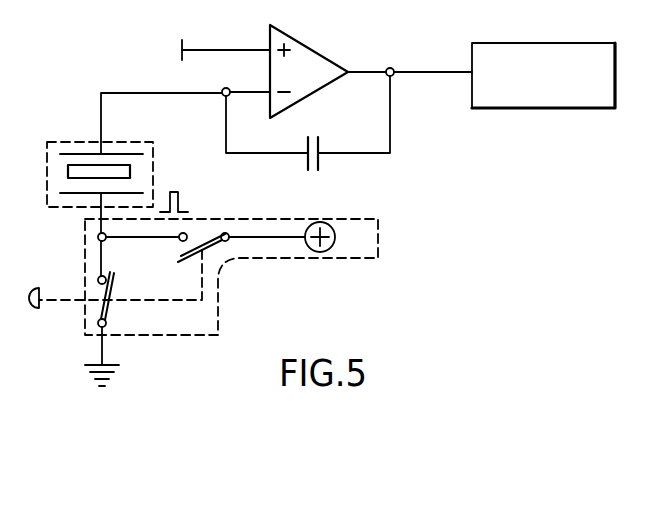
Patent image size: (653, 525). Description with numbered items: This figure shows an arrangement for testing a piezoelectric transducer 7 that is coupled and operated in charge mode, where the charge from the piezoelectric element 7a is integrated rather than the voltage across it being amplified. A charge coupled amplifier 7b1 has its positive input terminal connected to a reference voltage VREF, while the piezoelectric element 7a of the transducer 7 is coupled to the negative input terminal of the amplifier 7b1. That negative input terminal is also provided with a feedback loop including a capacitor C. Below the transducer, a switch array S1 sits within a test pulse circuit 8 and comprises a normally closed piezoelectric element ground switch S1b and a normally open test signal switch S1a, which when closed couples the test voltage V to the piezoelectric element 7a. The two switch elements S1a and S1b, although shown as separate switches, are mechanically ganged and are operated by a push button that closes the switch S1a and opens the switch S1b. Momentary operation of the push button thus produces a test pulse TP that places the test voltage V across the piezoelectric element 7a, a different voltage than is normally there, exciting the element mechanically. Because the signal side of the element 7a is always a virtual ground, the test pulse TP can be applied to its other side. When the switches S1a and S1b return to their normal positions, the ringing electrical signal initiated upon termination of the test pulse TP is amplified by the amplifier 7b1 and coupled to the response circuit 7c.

The piezoelectric transducer 7 is at (114, 162).
The piezoelectric element 7a is at (131, 171).
The charge coupled amplifier 7b1 is at (323, 53).
The response circuit 7c is at (537, 43).
The test pulse circuit 8 is at (82, 237).
The capacitor C is at (319, 168).
The test voltage V is at (335, 240).
The reference voltage VREF is at (182, 60).
The test pulse TP is at (188, 209).
The switch array S1 is at (160, 280).
The test signal switch S1a is at (230, 232).
The piezoelectric element ground switch S1b is at (99, 310).